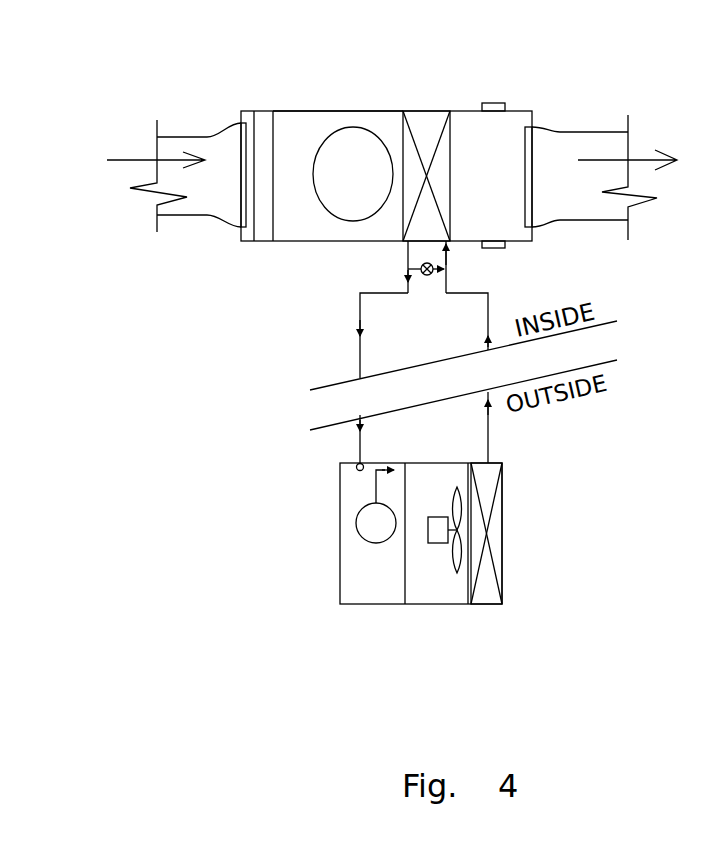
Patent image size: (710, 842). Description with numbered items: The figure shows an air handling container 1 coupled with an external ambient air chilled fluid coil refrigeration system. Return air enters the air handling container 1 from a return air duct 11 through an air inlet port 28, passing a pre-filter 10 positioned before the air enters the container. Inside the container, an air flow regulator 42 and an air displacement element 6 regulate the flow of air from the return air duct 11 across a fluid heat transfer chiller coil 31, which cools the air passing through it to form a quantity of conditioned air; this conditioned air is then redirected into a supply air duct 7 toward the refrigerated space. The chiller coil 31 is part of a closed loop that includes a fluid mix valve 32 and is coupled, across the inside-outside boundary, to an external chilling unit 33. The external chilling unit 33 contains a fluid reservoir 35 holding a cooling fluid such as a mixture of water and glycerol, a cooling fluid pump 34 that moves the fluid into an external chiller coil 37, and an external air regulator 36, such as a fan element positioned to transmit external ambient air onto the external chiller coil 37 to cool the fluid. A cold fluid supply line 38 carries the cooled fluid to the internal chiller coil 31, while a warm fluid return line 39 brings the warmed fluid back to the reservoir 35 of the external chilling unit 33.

The air handling container 1 is at (247, 108).
The air displacement element 6 is at (328, 223).
The supply air duct 7 is at (595, 227).
The pre-filter 10 is at (267, 233).
The return air duct 11 is at (205, 222).
The air inlet port 28 is at (310, 108).
The fluid heat transfer chiller coil 31 is at (425, 117).
The fluid mix valve 32 is at (426, 278).
The external chilling unit 33 is at (330, 478).
The cooling fluid pump 34 is at (357, 533).
The fluid reservoir 35 is at (378, 565).
The external air regulator 36 is at (440, 548).
The external chiller coil 37 is at (482, 608).
The cold fluid supply line 38 is at (493, 443).
The warm fluid return line 39 is at (365, 453).
The air flow regulator 42 is at (242, 162).